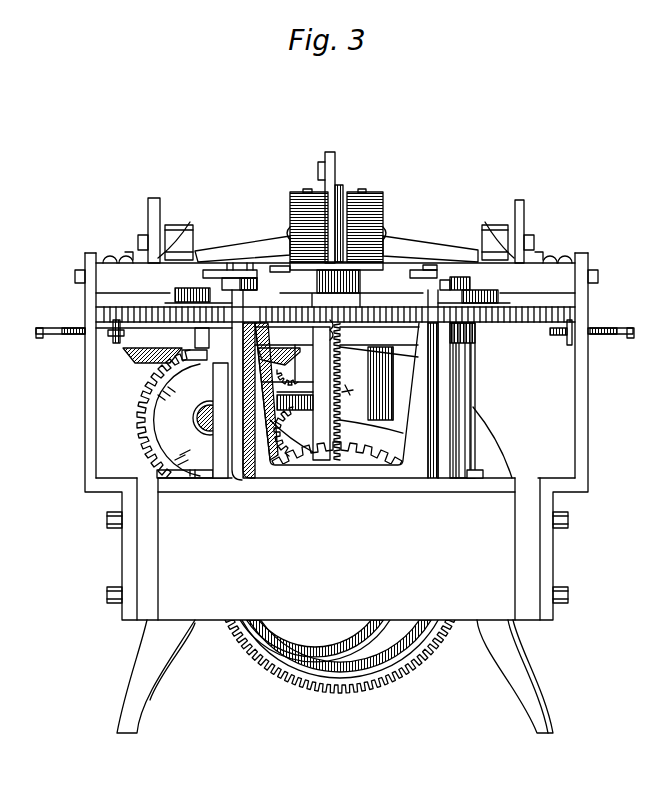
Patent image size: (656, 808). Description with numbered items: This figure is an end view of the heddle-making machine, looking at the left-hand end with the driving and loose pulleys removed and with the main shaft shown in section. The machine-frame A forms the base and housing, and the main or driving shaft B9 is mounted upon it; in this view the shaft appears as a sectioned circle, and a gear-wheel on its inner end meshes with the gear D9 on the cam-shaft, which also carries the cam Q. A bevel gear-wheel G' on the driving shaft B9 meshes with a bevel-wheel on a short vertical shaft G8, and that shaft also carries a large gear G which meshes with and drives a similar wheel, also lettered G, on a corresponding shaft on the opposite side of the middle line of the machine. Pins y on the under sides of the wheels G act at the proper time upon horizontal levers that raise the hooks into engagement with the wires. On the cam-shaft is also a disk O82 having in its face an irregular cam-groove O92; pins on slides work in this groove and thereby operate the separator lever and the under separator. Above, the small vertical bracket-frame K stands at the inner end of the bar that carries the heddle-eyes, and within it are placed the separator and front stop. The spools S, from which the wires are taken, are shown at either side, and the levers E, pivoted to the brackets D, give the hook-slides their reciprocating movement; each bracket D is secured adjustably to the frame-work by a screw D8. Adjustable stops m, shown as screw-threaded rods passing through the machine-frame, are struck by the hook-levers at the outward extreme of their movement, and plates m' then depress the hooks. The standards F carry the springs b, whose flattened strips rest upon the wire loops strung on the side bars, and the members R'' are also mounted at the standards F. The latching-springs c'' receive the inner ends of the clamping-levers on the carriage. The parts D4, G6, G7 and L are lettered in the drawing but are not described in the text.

The machine-frame A is at (336, 493).
The lever E is at (180, 290).
The bracket D is at (203, 274).
The bracket plate extension D4 is at (258, 276).
The screw D8 is at (410, 272).
The gear D9 is at (352, 672).
The bracket-frame K is at (325, 153).
The spool S is at (290, 200).
The latching-spring c'' is at (336, 234).
The standard F is at (156, 198).
The spring bracket R'' is at (336, 227).
The plate m' is at (337, 250).
The spring b is at (333, 250).
The adjustable stop m is at (335, 338).
The pin y is at (336, 340).
The wedge plate G7 is at (145, 358).
The gear G is at (314, 401).
The rack support G6 is at (205, 330).
The bevel gear-wheel G' is at (198, 434).
The driving shaft B9 is at (200, 428).
The lever L is at (347, 394).
The vertical shaft G8 is at (477, 384).
The cam Q is at (390, 666).
The cam-groove O92 is at (338, 644).
The disk O82 is at (305, 641).